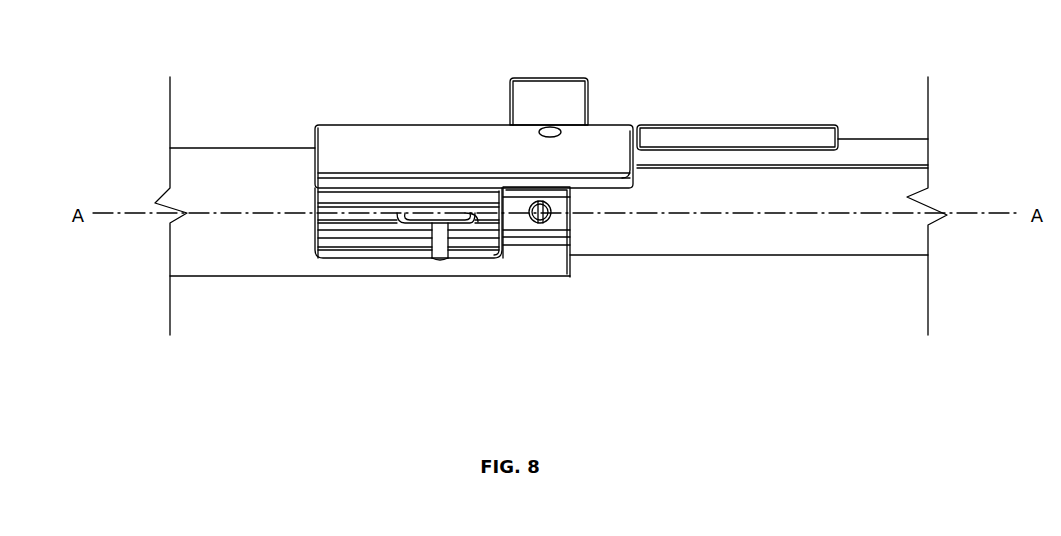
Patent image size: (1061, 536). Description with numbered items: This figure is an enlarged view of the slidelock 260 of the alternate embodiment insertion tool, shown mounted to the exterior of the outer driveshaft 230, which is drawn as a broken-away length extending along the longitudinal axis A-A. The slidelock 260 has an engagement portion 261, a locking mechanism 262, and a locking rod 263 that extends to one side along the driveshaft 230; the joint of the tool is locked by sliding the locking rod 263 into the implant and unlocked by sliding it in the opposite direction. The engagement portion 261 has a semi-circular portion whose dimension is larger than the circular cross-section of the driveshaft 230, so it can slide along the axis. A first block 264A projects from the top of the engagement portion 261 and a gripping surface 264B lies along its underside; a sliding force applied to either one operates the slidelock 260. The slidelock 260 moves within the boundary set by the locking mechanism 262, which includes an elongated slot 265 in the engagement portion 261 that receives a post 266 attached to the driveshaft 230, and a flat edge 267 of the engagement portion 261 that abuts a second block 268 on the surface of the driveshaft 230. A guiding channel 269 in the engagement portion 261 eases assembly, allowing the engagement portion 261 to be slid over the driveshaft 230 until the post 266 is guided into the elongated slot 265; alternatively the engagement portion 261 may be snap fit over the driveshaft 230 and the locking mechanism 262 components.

The outer driveshaft 230 is at (262, 255).
The slidelock 260 is at (488, 138).
The engagement portion 261 is at (367, 133).
The locking mechanism 262 is at (442, 256).
The locking rod 263 is at (886, 148).
The first block 264A is at (549, 77).
The gripping surface 264B is at (355, 230).
The elongated slot 265 is at (402, 220).
The post 266 is at (470, 217).
The flat edge 267 is at (505, 218).
The second block 268 is at (570, 218).
The guiding channel 269 is at (445, 258).